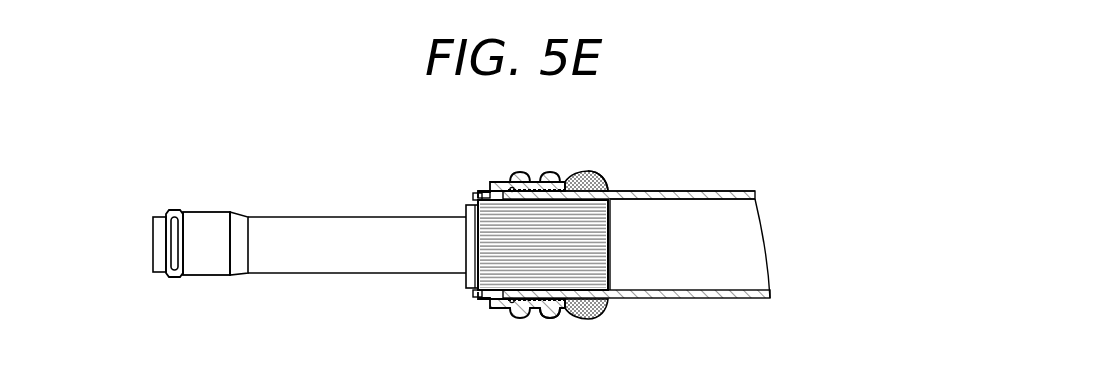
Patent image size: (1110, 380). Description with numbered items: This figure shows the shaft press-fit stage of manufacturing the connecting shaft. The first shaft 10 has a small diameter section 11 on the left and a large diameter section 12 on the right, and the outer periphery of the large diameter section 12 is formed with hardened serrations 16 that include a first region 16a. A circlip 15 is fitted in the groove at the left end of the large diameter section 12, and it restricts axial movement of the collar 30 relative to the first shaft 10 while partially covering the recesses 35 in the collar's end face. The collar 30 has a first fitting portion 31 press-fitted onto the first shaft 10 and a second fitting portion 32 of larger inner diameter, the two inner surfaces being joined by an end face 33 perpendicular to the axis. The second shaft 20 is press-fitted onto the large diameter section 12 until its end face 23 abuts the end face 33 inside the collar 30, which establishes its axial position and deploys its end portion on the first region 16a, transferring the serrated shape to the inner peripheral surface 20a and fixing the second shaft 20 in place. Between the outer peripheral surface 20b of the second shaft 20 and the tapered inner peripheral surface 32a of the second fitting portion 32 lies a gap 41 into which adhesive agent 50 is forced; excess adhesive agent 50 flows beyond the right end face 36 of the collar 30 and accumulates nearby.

The first shaft 10 is at (290, 208).
The small diameter section 11 is at (370, 232).
The large diameter section 12 is at (602, 218).
The circlip 15 is at (466, 199).
The serrations 16 is at (602, 270).
The first region 16a is at (547, 305).
The second shaft 20 is at (734, 308).
The inner peripheral surface 20a is at (727, 202).
The outer peripheral surface 20b is at (682, 191).
The end face 23 is at (503, 296).
The collar 30 is at (538, 170).
The first fitting portion 31 is at (484, 191).
The second fitting portion 32 is at (559, 184).
The inner peripheral surface 32a is at (521, 180).
The end face 33 is at (515, 300).
The recesses 35 is at (474, 194).
The right end face 36 is at (588, 313).
The gap 41 is at (580, 172).
The adhesive agent 50 is at (605, 181).